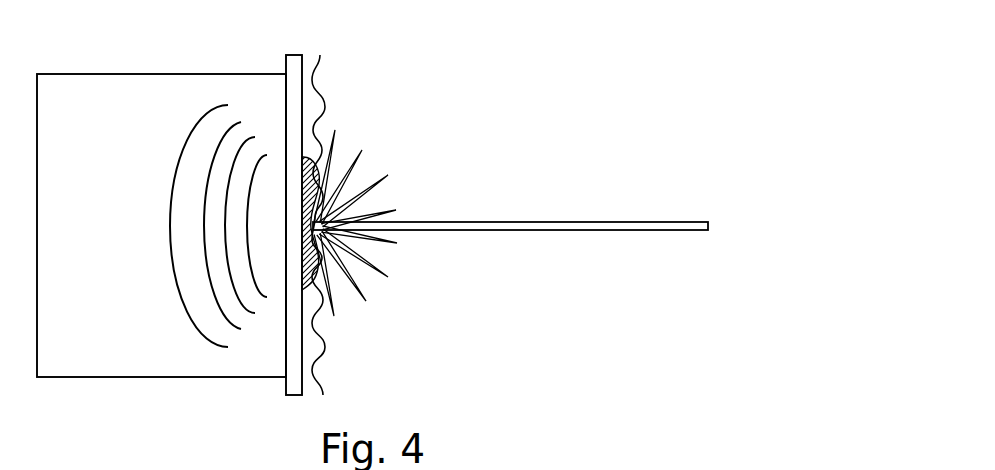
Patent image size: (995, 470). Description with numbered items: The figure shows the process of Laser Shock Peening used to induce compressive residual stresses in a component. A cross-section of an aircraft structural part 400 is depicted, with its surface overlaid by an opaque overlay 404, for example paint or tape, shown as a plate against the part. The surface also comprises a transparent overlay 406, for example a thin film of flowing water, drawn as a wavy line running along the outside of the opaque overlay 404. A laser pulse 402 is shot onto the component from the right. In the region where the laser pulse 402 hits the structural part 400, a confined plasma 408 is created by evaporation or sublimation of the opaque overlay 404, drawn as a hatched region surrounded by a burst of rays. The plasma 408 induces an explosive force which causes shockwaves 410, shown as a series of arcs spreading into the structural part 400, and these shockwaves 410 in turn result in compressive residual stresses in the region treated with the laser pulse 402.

The aircraft structural part 400 is at (75, 106).
The laser pulse 402 is at (598, 222).
The opaque overlay 404 is at (290, 353).
The transparent overlay 406 is at (312, 79).
The confined plasma 408 is at (313, 295).
The shockwaves 410 is at (242, 122).